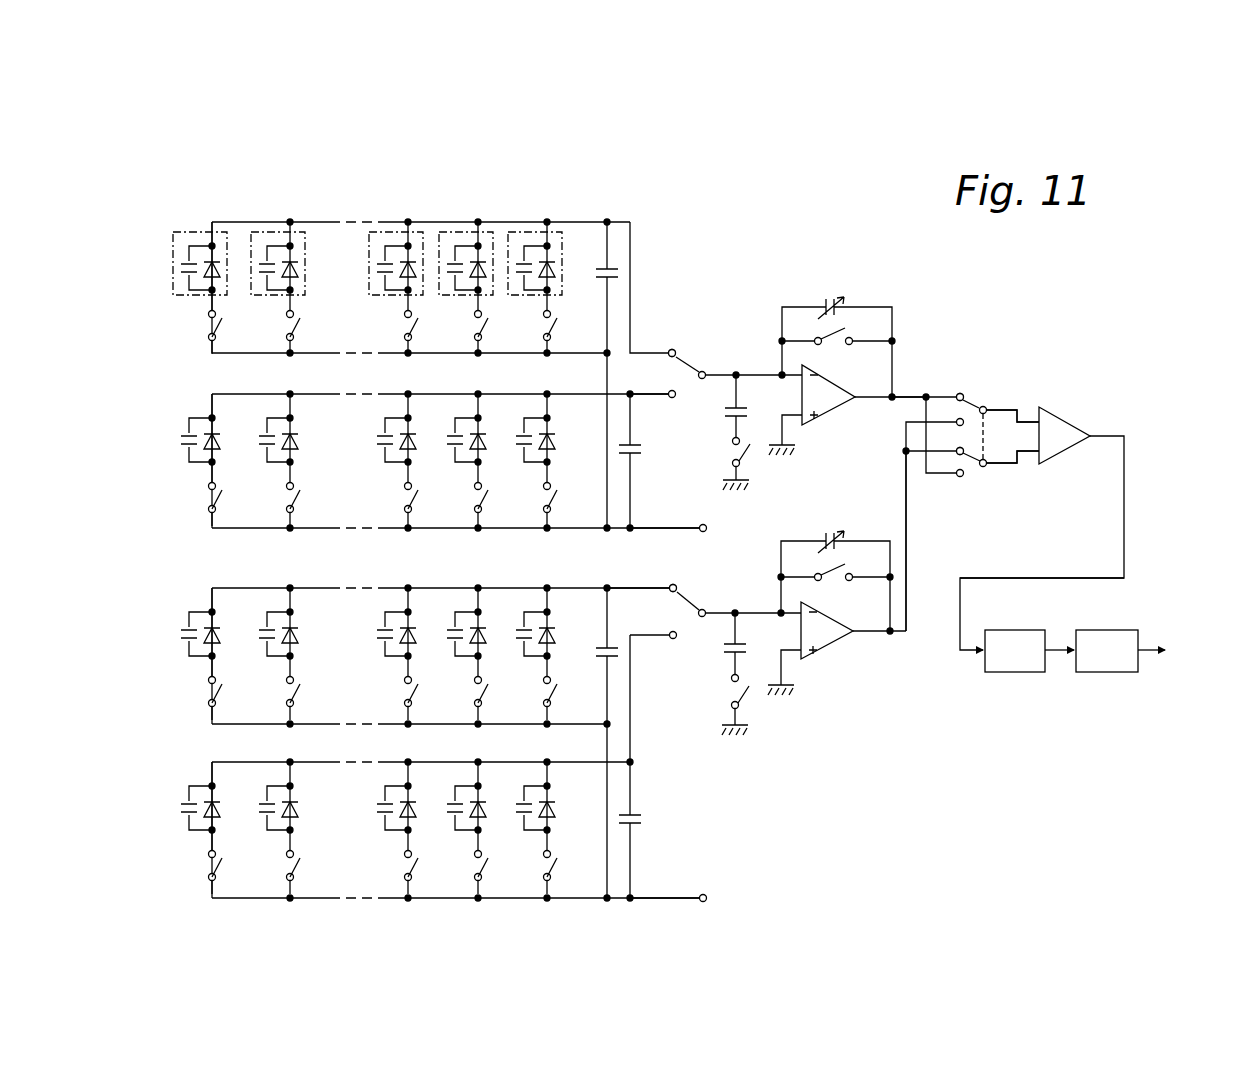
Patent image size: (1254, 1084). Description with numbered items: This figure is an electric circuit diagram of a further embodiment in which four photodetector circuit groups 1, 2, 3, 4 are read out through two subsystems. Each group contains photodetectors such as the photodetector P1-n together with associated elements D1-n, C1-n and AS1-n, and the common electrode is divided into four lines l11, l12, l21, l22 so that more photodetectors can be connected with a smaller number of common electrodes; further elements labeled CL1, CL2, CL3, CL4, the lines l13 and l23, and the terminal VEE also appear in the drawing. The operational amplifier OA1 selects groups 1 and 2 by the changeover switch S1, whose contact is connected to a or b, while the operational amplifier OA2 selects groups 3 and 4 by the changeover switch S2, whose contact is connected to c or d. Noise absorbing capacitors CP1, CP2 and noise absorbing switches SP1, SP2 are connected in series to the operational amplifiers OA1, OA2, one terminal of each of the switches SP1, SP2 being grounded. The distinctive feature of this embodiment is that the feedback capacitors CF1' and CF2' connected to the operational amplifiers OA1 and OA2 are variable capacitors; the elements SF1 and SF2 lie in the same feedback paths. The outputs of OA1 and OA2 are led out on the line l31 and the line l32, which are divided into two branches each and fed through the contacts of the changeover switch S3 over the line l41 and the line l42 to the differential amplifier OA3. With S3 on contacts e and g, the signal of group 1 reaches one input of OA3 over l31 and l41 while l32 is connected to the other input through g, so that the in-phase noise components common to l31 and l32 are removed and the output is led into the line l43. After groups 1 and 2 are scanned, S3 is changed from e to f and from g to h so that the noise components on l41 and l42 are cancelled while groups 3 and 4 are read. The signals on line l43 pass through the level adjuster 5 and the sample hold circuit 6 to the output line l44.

The photodetector circuit group 1 is at (180, 350).
The photodetector circuit group 2 is at (180, 530).
The photodetector circuit group 3 is at (182, 713).
The photodetector circuit group 4 is at (180, 897).
The level adjuster 5 is at (1015, 633).
The sample hold circuit 6 is at (1104, 633).
The photodetector P1-n is at (185, 232).
The diode D1-n is at (216, 266).
The capacitor C1-n is at (186, 274).
The analog switch AS1-n is at (223, 319).
The line capacitor CL1 is at (620, 270).
The line capacitor CL2 is at (637, 455).
The line capacitor CL3 is at (616, 648).
The line capacitor CL4 is at (637, 818).
The line l11 is at (596, 222).
The line l12 is at (646, 397).
The line l13 is at (657, 527).
The line l21 is at (623, 588).
The line l22 is at (648, 637).
The line l23 is at (657, 897).
The line l31 is at (905, 395).
The line l32 is at (908, 505).
The line l41 is at (998, 406).
The line l42 is at (996, 465).
The line l43 is at (1035, 577).
The line l44 is at (1152, 655).
The changeover switch S1 is at (706, 370).
The changeover switch S2 is at (704, 608).
The changeover switch S3 is at (982, 406).
The noise absorbing capacitor CP1 is at (722, 412).
The noise absorbing capacitor CP2 is at (722, 655).
The noise absorbing switch SP1 is at (745, 465).
The noise absorbing switch SP2 is at (744, 706).
The feedback capacitor CF1' is at (837, 329).
The feedback capacitor CF2' is at (835, 564).
The feedback switch SF1 is at (830, 345).
The feedback switch SF2 is at (830, 580).
The operational amplifier OA1 is at (830, 410).
The operational amplifier OA2 is at (826, 643).
The differential amplifier OA3 is at (1062, 423).
The negative supply voltage VEE is at (715, 898).
The contact a is at (670, 351).
The contact b is at (669, 392).
The contact c is at (671, 587).
The contact d is at (676, 637).
The contact e is at (958, 394).
The contact f is at (956, 424).
The contact g is at (961, 449).
The contact h is at (956, 475).